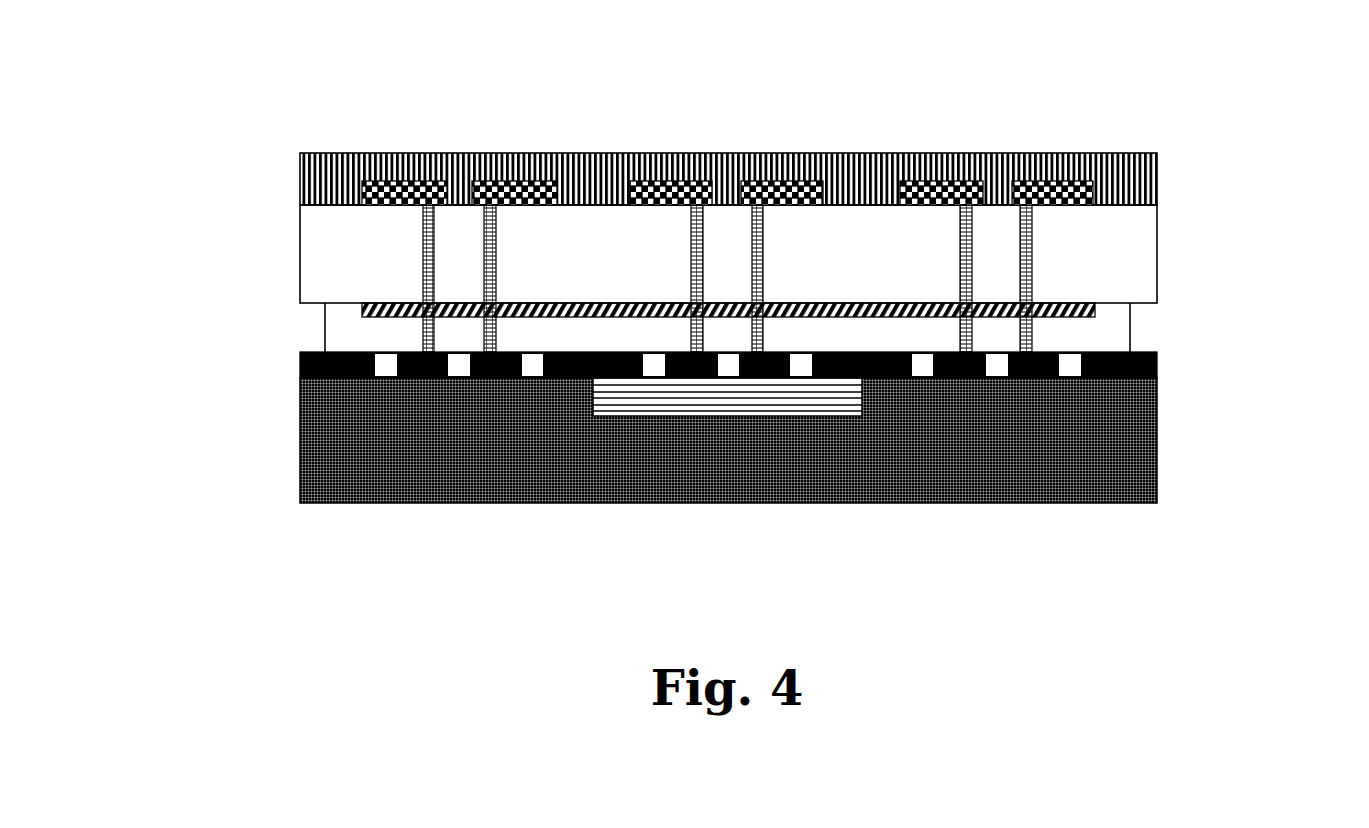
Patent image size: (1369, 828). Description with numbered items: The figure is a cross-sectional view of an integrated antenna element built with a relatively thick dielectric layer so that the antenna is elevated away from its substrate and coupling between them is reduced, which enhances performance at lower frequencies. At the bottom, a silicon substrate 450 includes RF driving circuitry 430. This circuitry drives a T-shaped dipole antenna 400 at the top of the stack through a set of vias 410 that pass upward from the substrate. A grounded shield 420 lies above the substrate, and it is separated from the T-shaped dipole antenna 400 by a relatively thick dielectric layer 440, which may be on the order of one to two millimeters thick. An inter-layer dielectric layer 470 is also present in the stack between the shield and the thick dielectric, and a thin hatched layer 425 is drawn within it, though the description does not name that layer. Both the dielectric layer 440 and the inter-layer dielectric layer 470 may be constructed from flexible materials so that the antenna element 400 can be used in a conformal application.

The T-shaped dipole antenna 400 is at (356, 192).
The vias 410 is at (688, 280).
The grounded shield 420 is at (1157, 366).
The membrane layer 425 is at (1130, 255).
The RF driving circuitry 430 is at (800, 392).
The dielectric layer 440 is at (308, 253).
The silicon substrate 450 is at (300, 438).
The inter-layer dielectric layer 470 is at (337, 331).